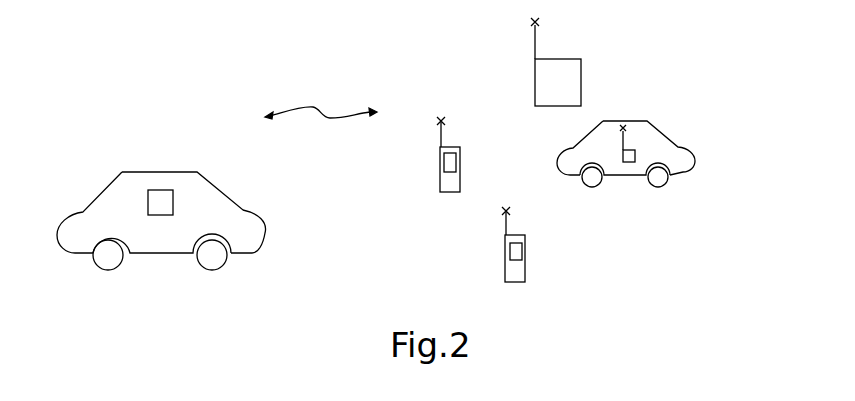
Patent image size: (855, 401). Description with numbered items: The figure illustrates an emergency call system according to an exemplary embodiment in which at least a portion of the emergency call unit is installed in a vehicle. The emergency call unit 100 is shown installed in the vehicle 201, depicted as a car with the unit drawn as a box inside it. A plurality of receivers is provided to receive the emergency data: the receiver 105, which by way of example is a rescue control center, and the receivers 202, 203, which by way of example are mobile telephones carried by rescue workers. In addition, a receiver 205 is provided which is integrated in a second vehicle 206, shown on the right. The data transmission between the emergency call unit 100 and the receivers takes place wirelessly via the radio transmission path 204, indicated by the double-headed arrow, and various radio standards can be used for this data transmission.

The emergency call unit 100 is at (158, 190).
The receiver 105 is at (581, 80).
The vehicle 201 is at (267, 233).
The receiver 202 is at (460, 180).
The receiver 203 is at (525, 270).
The radio transmission path 204 is at (330, 117).
The receiver 205 is at (628, 162).
The vehicle 206 is at (695, 162).